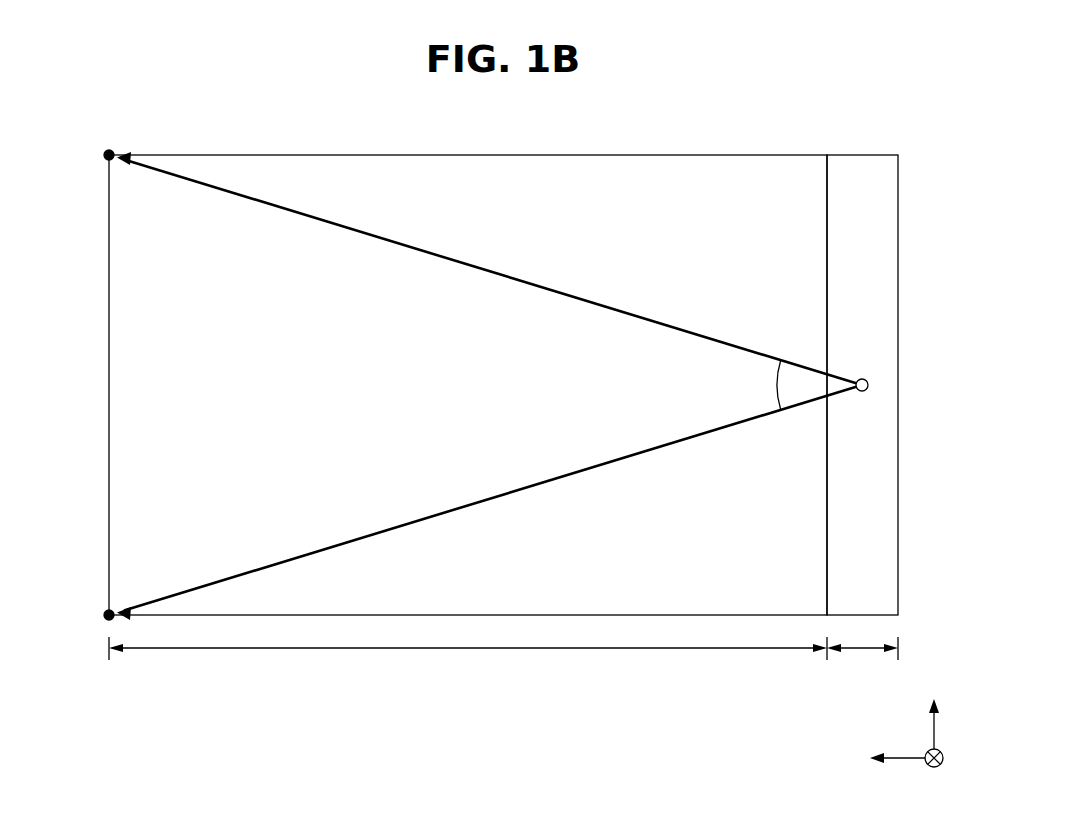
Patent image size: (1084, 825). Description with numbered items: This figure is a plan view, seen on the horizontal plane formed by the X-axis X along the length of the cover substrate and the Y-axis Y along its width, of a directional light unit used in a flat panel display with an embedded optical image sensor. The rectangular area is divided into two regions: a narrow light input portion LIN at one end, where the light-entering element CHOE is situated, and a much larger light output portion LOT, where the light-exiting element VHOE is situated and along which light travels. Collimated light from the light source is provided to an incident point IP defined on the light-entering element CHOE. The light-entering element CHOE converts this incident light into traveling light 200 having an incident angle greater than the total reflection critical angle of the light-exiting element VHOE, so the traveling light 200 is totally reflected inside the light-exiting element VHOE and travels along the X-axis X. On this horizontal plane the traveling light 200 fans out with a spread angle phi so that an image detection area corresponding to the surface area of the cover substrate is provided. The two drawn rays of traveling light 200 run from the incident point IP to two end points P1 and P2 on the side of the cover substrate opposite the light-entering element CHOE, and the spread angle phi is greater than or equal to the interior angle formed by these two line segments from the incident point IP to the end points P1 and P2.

The traveling light 200 is at (635, 313).
The first end point P1 is at (109, 149).
The second end point P2 is at (104, 619).
The incident point IP is at (868, 385).
The light-exiting element VHOE is at (688, 168).
The light-entering element CHOE is at (860, 167).
The light output portion LOT is at (468, 657).
The light input portion LIN is at (862, 657).
The spread angle phi is at (765, 385).
The X-axis X is at (899, 759).
The Y-axis Y is at (934, 711).